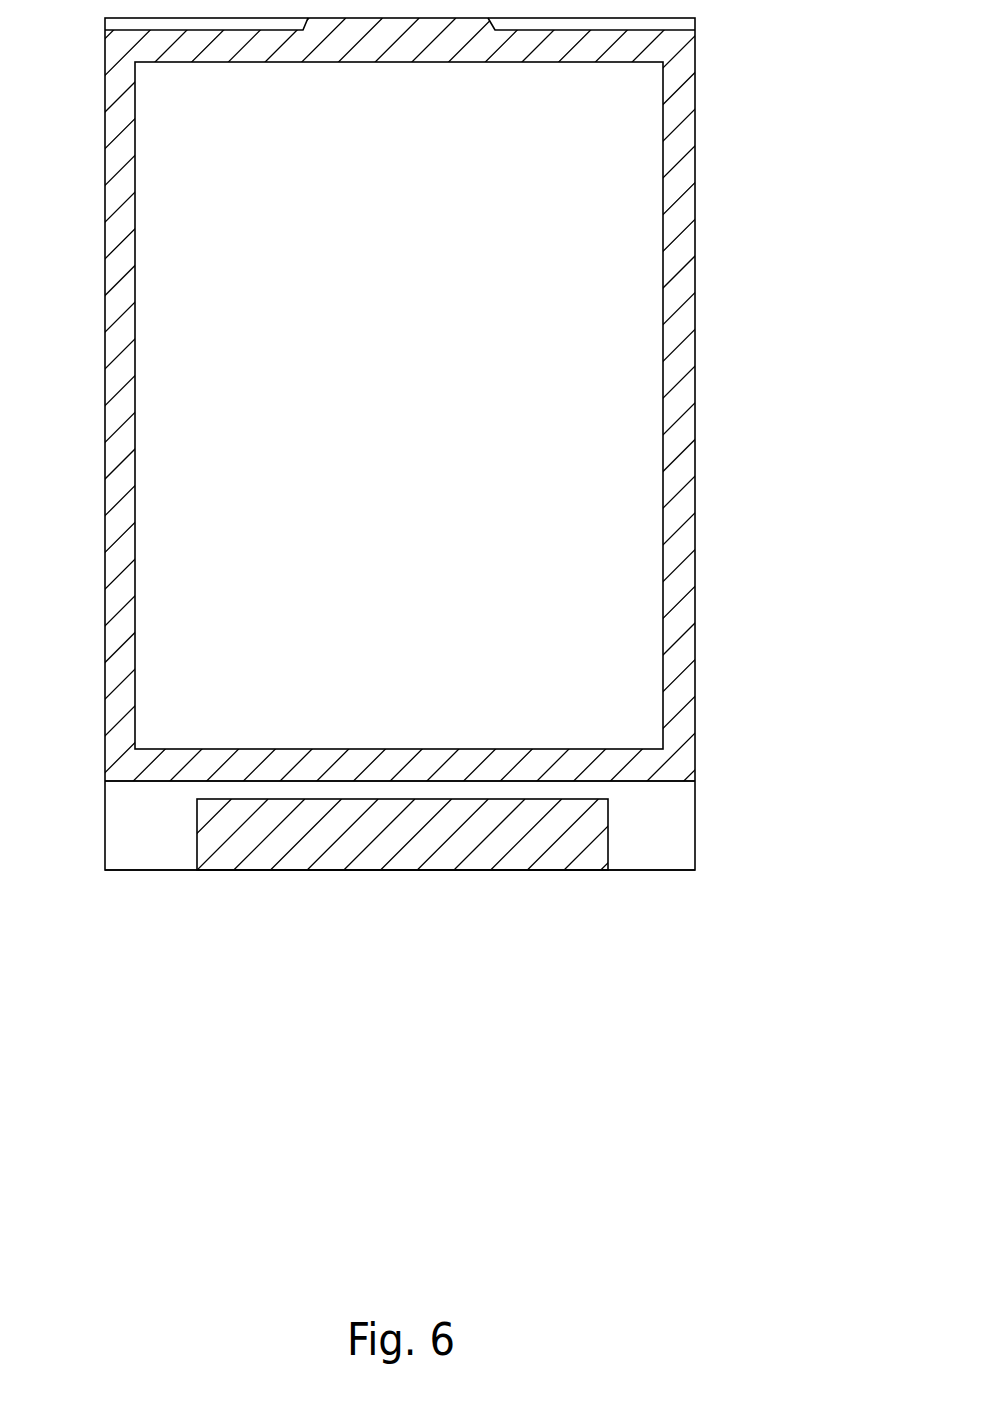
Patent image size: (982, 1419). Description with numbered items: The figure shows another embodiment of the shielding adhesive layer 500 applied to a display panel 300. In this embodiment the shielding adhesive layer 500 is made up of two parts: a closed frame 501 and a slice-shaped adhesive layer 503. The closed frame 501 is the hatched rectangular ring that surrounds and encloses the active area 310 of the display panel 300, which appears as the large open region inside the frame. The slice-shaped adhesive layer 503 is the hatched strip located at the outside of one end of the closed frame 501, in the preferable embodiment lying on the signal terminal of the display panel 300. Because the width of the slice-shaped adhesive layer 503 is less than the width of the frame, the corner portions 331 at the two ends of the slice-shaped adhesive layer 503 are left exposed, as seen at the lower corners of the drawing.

The display panel 300 is at (105, 844).
The active area 310 is at (612, 149).
The corner portions 331 is at (683, 848).
The shielding adhesive layer 500 is at (798, 447).
The closed frame 501 is at (677, 375).
The slice-shaped adhesive layer 503 is at (597, 820).